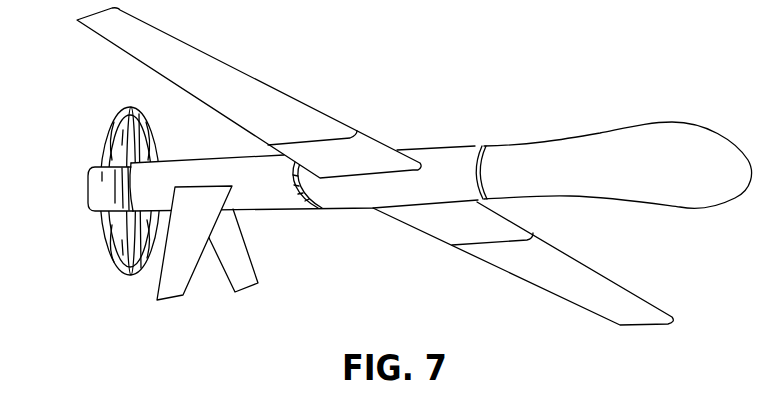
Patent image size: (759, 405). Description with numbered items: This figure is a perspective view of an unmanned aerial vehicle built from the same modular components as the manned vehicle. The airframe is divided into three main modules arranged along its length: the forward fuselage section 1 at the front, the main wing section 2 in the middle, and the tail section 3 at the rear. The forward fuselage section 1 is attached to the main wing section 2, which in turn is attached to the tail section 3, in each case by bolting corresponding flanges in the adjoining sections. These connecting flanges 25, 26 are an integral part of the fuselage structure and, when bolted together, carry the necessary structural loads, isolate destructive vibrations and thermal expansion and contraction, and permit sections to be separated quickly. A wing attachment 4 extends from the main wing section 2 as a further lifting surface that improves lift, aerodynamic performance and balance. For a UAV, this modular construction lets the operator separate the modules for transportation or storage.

The forward fuselage section 1 is at (603, 155).
The main wing section 2 is at (372, 157).
The tail section 3 is at (267, 193).
The wing attachment 4 is at (193, 58).
The connecting flange 25 is at (485, 160).
The connecting flange 26 is at (318, 208).